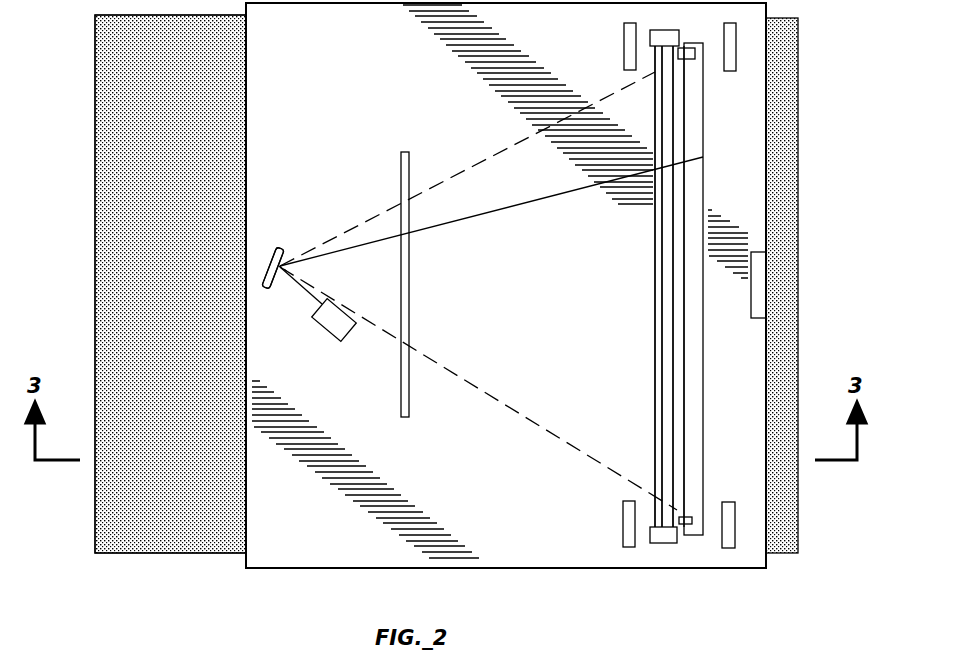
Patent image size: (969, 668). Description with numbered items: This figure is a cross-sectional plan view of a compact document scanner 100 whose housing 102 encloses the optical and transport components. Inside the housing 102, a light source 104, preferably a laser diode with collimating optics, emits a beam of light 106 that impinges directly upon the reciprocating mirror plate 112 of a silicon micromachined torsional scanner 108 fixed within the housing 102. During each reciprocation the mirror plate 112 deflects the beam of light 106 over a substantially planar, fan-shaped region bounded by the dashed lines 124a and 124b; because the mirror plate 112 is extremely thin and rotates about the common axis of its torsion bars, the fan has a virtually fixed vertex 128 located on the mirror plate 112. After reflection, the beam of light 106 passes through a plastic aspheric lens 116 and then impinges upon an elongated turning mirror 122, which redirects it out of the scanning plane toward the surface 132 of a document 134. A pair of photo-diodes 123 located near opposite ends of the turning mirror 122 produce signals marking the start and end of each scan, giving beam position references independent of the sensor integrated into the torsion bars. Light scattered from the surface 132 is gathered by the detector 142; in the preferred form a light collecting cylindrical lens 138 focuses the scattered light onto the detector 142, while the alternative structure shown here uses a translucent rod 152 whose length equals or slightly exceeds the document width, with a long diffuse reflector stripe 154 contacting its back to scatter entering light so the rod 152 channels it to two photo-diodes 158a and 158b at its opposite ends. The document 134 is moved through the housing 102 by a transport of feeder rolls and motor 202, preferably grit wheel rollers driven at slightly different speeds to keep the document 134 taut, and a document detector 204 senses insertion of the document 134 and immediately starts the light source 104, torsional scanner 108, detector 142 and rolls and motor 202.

The document scanner 100 is at (808, 155).
The housing 102 is at (525, 568).
The light source 104 is at (328, 336).
The beam of light 106 is at (458, 228).
The torsional scanner 108 is at (268, 262).
The mirror plate 112 is at (283, 252).
The aspheric lens 116 is at (409, 405).
The turning mirror 122 is at (704, 157).
The photo-diodes 123 is at (700, 58).
The dashed line 124a is at (512, 138).
The dashed line 124b is at (478, 372).
The vertex 128 is at (295, 272).
The surface 132 is at (128, 188).
The document 134 is at (96, 272).
The cylindrical lens 138 is at (667, 290).
The detector 142 is at (655, 240).
The rod 152 is at (655, 135).
The reflector stripe 154 is at (652, 202).
The photo-diode 158a is at (665, 31).
The photo-diode 158b is at (660, 543).
The rolls and motor 202 is at (624, 42).
The document detector 204 is at (744, 262).